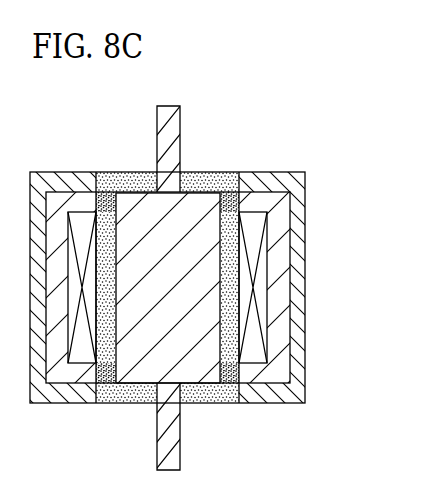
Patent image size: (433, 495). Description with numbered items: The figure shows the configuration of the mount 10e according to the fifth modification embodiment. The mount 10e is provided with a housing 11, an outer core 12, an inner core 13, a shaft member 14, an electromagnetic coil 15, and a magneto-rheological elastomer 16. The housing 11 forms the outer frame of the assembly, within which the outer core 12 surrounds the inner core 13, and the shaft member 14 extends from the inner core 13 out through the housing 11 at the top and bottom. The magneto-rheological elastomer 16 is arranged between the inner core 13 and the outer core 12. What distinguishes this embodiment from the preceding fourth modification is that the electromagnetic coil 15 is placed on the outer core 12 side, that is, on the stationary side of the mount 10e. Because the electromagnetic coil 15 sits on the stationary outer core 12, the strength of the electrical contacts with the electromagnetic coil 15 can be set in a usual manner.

The mount 10e is at (265, 128).
The housing 11 is at (298, 363).
The outer core 12 is at (277, 238).
The inner core 13 is at (136, 216).
The shaft member 14 is at (181, 111).
The electromagnetic coil 15 is at (258, 293).
The magneto-rheological elastomer (MRE) 16 is at (221, 181).